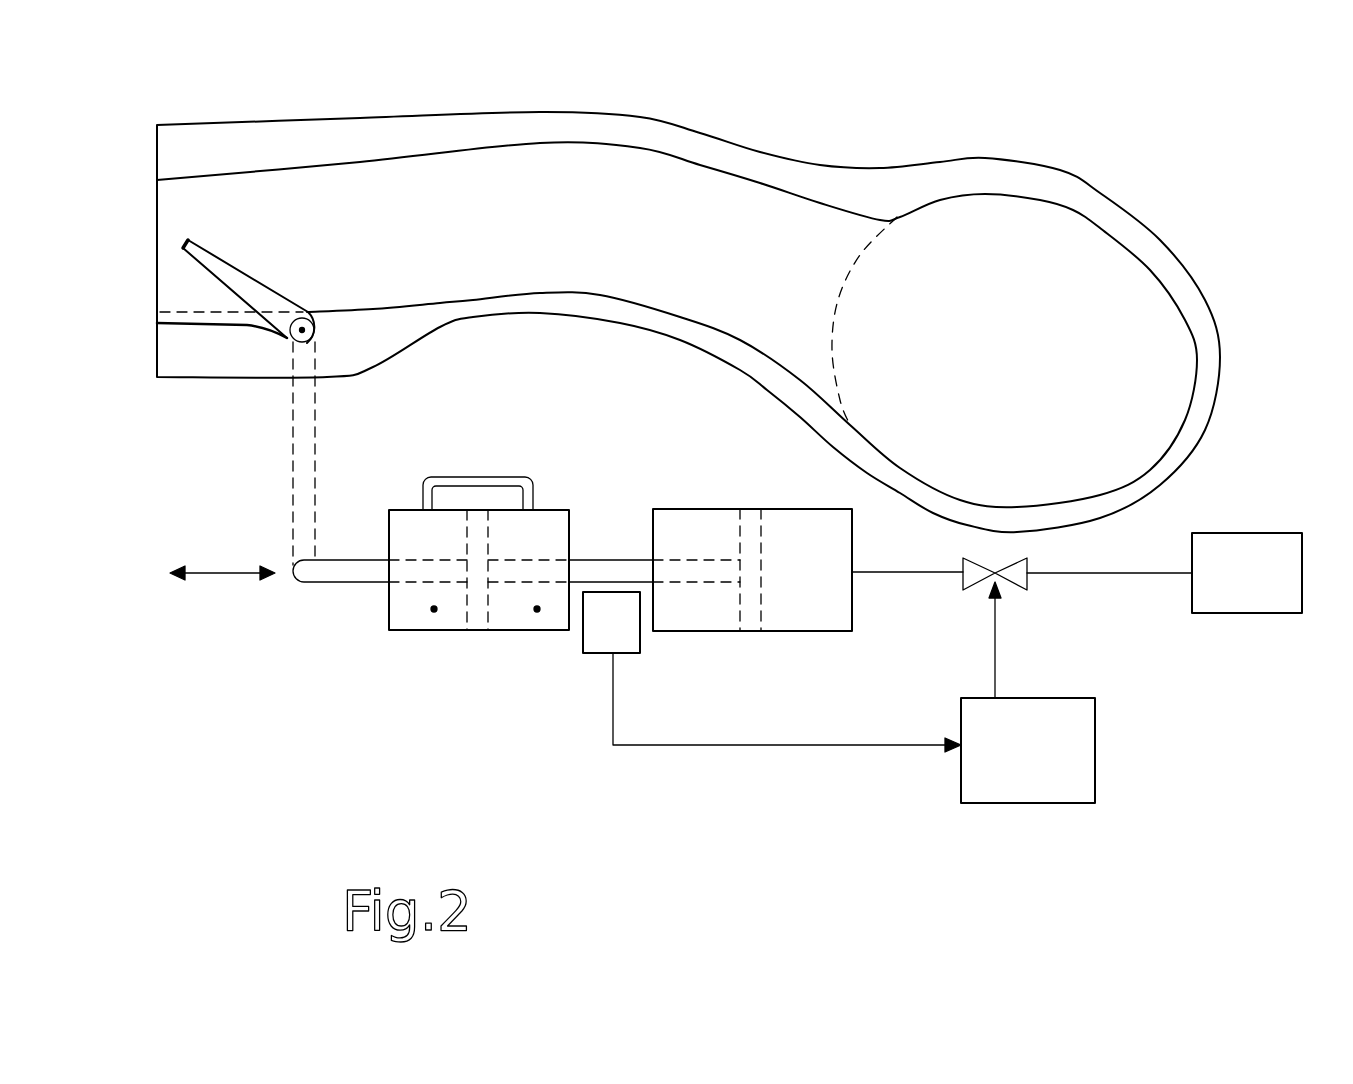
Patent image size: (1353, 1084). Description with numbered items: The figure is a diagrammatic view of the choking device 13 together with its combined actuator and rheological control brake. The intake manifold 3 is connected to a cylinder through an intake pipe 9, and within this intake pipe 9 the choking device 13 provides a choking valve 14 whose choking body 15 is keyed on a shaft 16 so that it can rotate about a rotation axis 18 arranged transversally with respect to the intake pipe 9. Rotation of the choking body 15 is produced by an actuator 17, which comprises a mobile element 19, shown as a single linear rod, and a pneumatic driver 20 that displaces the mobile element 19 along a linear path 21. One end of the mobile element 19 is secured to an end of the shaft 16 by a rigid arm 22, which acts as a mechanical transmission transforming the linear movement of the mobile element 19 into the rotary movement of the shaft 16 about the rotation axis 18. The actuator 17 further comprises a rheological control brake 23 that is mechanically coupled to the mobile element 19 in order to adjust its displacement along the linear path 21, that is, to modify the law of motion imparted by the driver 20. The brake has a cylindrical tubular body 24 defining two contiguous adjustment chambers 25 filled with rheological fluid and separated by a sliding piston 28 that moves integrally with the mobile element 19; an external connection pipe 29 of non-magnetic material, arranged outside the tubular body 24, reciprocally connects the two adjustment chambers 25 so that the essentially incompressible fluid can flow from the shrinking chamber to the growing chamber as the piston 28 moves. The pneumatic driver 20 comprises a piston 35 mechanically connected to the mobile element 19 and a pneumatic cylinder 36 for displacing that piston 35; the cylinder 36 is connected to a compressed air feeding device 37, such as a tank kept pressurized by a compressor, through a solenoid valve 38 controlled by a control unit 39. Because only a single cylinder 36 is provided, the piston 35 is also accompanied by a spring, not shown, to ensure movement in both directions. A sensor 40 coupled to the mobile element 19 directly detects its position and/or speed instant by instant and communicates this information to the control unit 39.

The intake manifold 3 is at (1046, 208).
The intake pipe 9 is at (677, 163).
The choking device 13 is at (210, 667).
The choking valve 14 is at (269, 214).
The choking body 15 is at (185, 241).
The shaft 16 is at (287, 338).
The actuator 17 is at (475, 690).
The rotation axis 18 is at (318, 346).
The mobile element 19 is at (349, 578).
The pneumatic driver 20 is at (769, 644).
The linear path 21 is at (222, 590).
The rigid arm 22 is at (300, 465).
The rheological control brake 23 is at (451, 655).
The cylindrical tubular body 24 is at (553, 508).
The adjustment chambers 25 is at (434, 612).
The sliding piston 28 is at (483, 612).
The external connection pipe 29 is at (483, 487).
The piston 35 is at (757, 590).
The pneumatic cylinder 36 is at (703, 509).
The compressed air feeding device 37 is at (1228, 591).
The solenoid valve 38 is at (975, 590).
The control unit 39 is at (1006, 771).
The sensor 40 is at (627, 638).